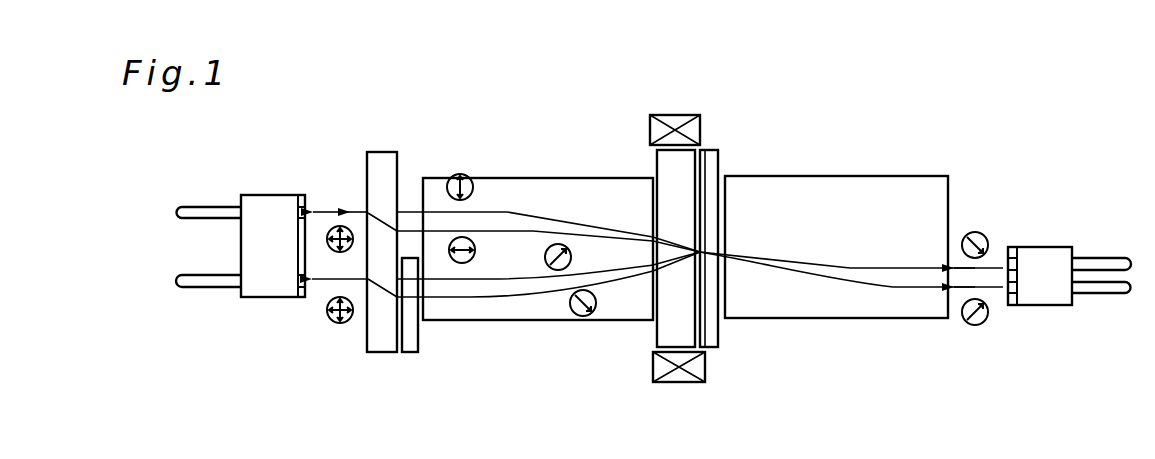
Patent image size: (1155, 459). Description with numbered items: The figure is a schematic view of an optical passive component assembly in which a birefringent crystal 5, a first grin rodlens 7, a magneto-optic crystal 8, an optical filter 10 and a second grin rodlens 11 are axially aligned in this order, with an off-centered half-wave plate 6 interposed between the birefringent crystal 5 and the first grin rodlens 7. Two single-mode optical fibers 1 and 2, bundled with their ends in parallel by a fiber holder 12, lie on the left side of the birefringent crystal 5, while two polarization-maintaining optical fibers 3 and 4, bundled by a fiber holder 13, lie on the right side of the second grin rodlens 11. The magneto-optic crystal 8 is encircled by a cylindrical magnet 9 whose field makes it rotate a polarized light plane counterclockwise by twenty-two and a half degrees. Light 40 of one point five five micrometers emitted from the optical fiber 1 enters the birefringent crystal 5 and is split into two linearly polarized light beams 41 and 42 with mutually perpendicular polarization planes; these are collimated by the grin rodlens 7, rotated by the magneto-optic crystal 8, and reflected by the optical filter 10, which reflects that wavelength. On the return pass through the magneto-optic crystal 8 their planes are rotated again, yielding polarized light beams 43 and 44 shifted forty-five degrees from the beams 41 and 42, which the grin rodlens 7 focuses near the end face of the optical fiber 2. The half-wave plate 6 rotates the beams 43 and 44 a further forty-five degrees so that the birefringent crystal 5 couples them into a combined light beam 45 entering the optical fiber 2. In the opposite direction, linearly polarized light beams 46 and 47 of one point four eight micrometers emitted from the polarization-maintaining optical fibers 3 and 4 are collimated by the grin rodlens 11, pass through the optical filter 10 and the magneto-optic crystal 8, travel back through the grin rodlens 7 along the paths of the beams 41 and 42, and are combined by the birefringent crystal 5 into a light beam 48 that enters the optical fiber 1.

The single-mode optical fiber 1 is at (213, 208).
The single-mode optical fiber 2 is at (213, 288).
The polarization-maintaining optical fiber 3 is at (1097, 294).
The polarization-maintaining optical fiber 4 is at (1097, 259).
The birefringent crystal 5 is at (376, 353).
The half-wave plate 6 is at (407, 353).
The first grin rodlens 7 is at (600, 321).
The magneto-optic crystal 8 is at (657, 331).
The cylindrical magnet 9 is at (683, 115).
The optical filter 10 is at (718, 340).
The second grin rodlens 11 is at (805, 320).
The fiber holder 12 is at (258, 298).
The fiber holder 13 is at (1037, 298).
The light 40 is at (356, 209).
The linearly polarized light beam 41 is at (507, 210).
The linearly polarized light beam 42 is at (533, 227).
The polarized light beam 43 is at (530, 299).
The polarized light beam 44 is at (480, 282).
The combined light beam 45 is at (322, 285).
The linearly polarized light beam 46 is at (893, 288).
The linearly polarized light beam 47 is at (853, 270).
The combined light beam 48 is at (321, 209).